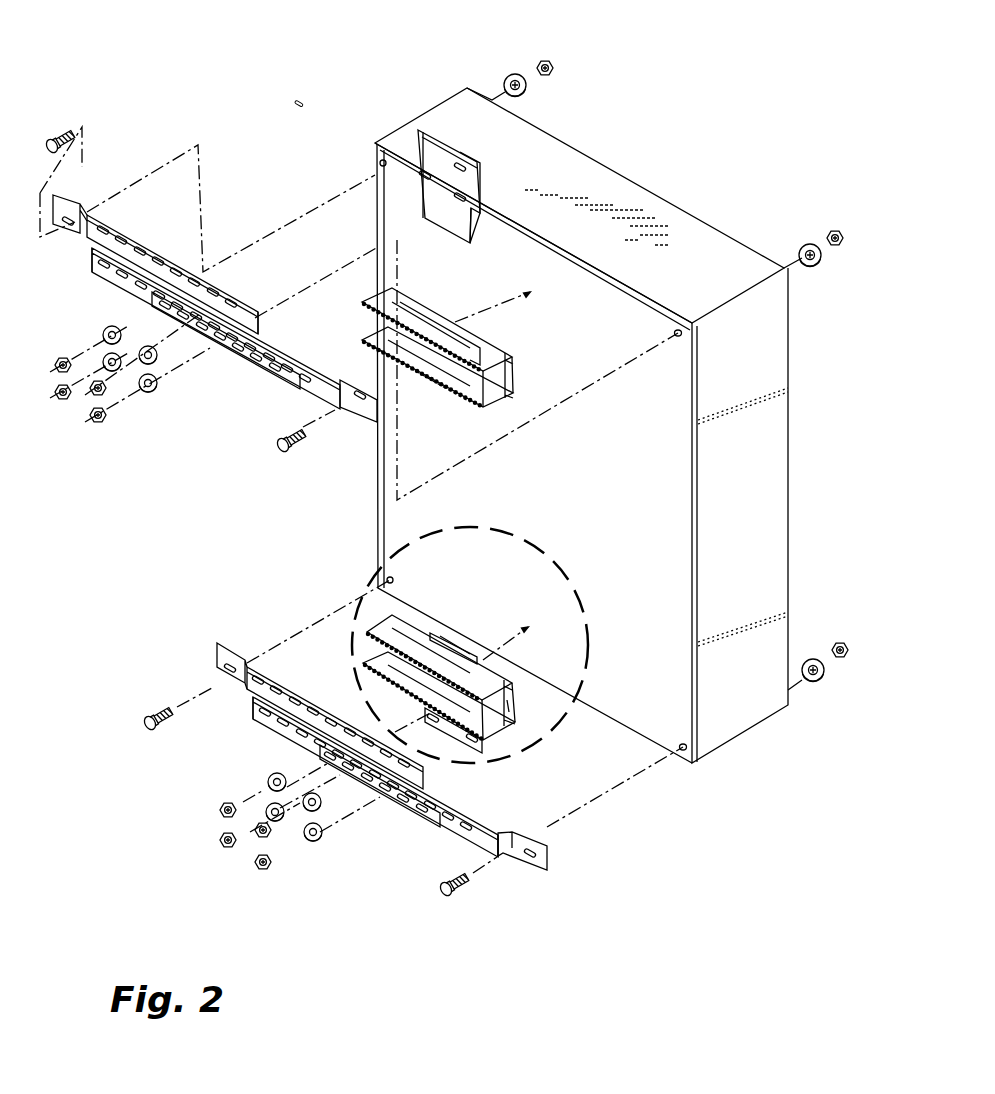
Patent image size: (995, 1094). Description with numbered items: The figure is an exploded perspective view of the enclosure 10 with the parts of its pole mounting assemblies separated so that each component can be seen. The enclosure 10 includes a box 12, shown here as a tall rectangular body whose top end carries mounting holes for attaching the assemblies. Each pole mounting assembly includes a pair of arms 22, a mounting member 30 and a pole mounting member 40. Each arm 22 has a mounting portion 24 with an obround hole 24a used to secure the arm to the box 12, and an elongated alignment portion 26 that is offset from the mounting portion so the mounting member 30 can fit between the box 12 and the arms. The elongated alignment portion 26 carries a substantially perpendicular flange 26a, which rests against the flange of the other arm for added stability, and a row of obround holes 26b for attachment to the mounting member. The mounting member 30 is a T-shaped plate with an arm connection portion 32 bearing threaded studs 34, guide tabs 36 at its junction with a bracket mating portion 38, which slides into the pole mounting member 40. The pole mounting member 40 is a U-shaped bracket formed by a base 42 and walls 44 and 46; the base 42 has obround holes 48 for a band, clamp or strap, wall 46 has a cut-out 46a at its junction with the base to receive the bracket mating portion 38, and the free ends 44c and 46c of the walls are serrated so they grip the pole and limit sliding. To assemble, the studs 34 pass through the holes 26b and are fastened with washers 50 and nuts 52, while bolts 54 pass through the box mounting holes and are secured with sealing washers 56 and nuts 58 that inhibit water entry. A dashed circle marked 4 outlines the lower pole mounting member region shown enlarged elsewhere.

The enclosure 10 is at (703, 128).
The box 12 is at (448, 105).
The arm 22 is at (144, 240).
The mounting portion 24 is at (68, 196).
The hole 24a is at (70, 230).
The elongated alignment portion 26 is at (190, 276).
The flange 26a is at (103, 262).
The holes 26b is at (246, 306).
The mounting member 30 is at (437, 126).
The arm connection portion 32 is at (482, 182).
The studs 34 is at (423, 172).
The guide tabs 36 is at (417, 185).
The bracket mating portion 38 is at (458, 646).
The pole mounting member 40 is at (440, 520).
The base 42 is at (519, 376).
The wall 44 is at (367, 298).
The free end 44c is at (374, 673).
The wall 46 is at (495, 402).
The cut-out 46a is at (441, 363).
The free end 46c is at (402, 645).
The holes 48 is at (488, 348).
The washers 50 is at (103, 333).
The nuts 52 is at (60, 357).
The bolts 54 is at (58, 132).
The washers 56 is at (514, 73).
The nuts 58 is at (545, 58).
The detail circle FIG. 4 is at (531, 532).